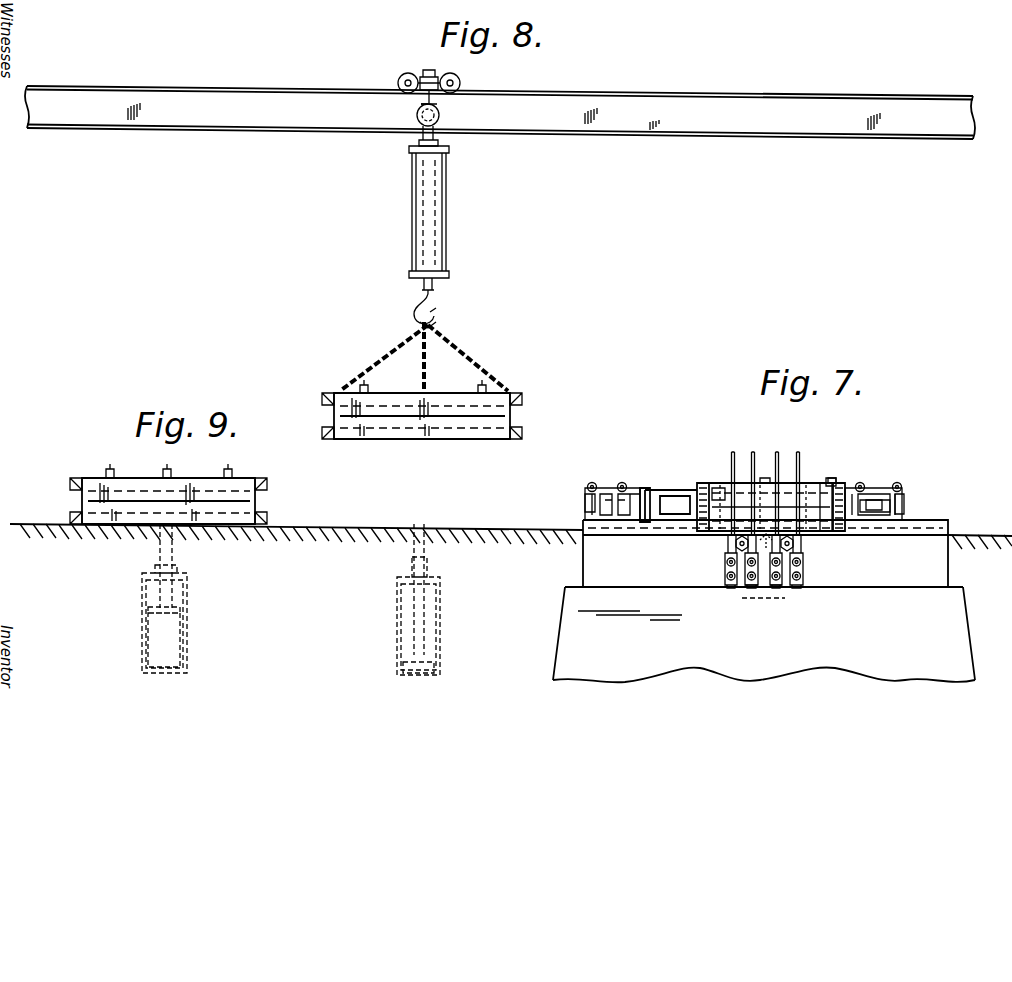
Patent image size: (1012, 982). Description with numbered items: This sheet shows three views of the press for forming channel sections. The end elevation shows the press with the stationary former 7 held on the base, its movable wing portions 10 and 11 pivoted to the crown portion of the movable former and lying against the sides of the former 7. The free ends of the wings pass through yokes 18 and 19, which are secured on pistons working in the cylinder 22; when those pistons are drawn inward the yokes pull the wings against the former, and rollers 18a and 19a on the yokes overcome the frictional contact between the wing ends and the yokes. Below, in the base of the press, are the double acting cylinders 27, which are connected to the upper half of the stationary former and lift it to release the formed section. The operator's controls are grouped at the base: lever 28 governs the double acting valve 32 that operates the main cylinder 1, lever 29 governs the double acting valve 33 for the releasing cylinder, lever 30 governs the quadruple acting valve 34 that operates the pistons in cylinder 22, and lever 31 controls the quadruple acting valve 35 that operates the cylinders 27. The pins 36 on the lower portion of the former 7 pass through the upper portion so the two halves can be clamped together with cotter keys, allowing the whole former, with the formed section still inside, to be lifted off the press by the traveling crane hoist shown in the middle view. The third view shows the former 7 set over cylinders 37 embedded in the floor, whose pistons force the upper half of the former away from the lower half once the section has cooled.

In FIG. 7, the cylinder 1 is at (726, 486).
In FIG. 8, the stationary former 7 is at (440, 440).
In FIG. 9, the stationary former 7 is at (194, 486).
In FIG. 7, the stationary former 7 is at (684, 482).
In FIG. 7, the wing portion 10 is at (872, 494).
In FIG. 7, the wing portion 11 is at (585, 514).
In FIG. 7, the yoke 18 is at (885, 488).
In FIG. 7, the roller 18a is at (905, 503).
In FIG. 7, the yoke 19 is at (610, 488).
In FIG. 7, the roller 19a is at (588, 500).
In FIG. 7, the cylinder 22 is at (830, 481).
In FIG. 7, the double acting cylinders 27 is at (752, 602).
In FIG. 7, the lever 28 is at (776, 456).
In FIG. 7, the lever 29 is at (754, 452).
In FIG. 7, the lever 30 is at (732, 456).
In FIG. 7, the lever 31 is at (799, 456).
In FIG. 7, the double acting valve 32 is at (782, 587).
In FIG. 7, the double acting valve 33 is at (746, 587).
In FIG. 7, the quadruple acting valve 34 is at (724, 580).
In FIG. 7, the quadruple acting valve 35 is at (804, 577).
In FIG. 8, the pins 36 is at (423, 378).
In FIG. 9, the pins 36 is at (185, 462).
In FIG. 7, the pins 36 is at (833, 468).
In FIG. 9, the cylinders 37 is at (450, 636).